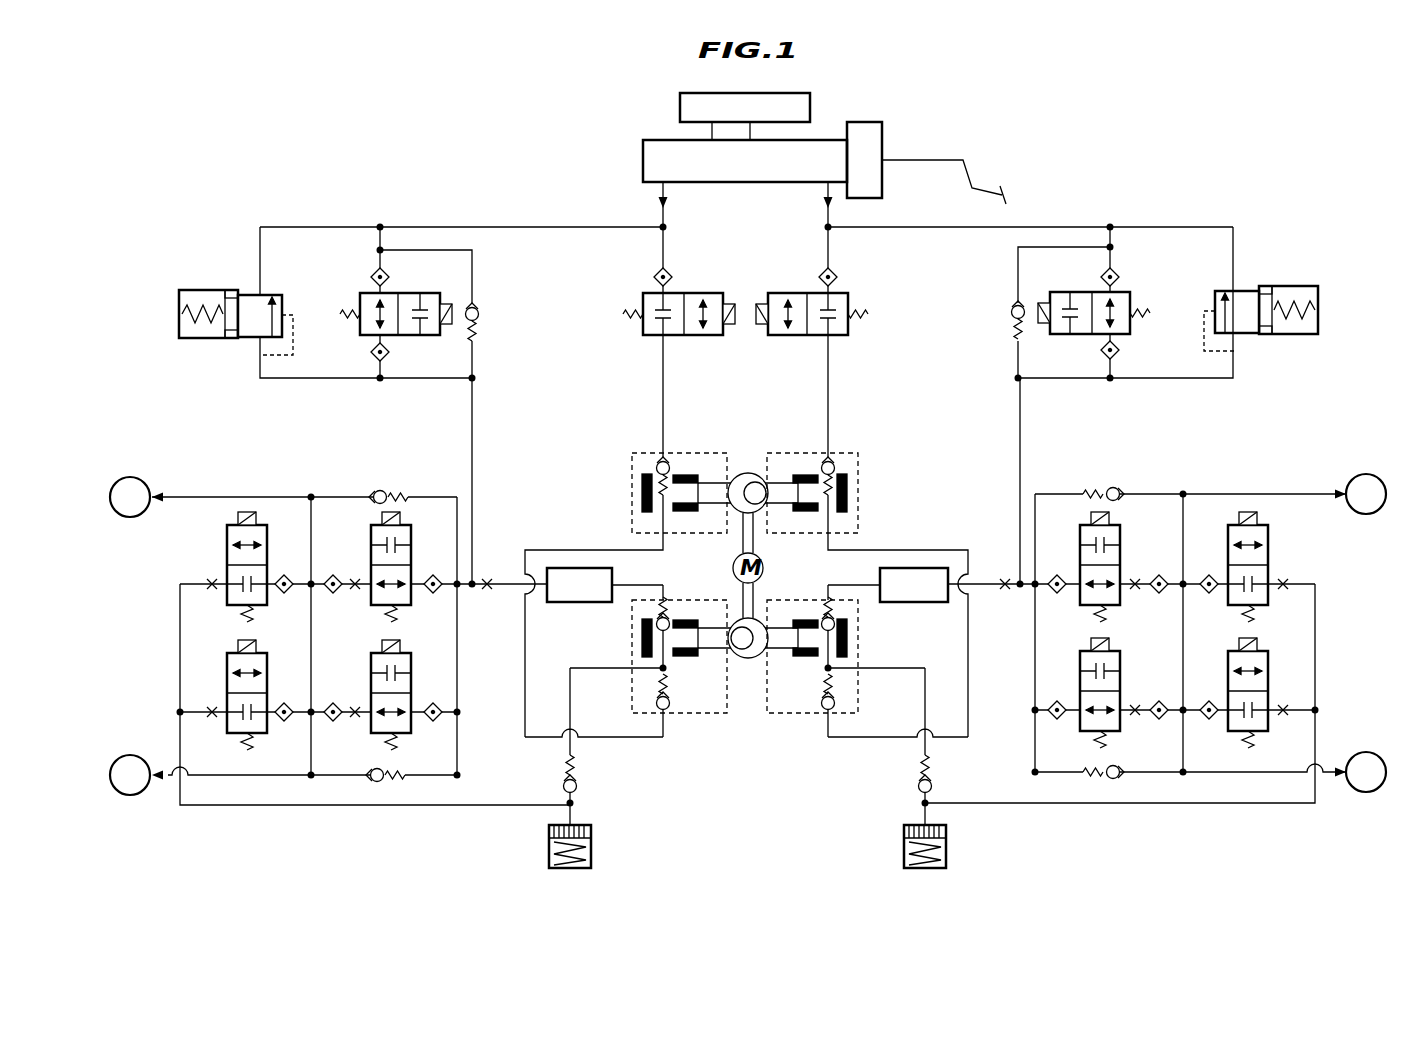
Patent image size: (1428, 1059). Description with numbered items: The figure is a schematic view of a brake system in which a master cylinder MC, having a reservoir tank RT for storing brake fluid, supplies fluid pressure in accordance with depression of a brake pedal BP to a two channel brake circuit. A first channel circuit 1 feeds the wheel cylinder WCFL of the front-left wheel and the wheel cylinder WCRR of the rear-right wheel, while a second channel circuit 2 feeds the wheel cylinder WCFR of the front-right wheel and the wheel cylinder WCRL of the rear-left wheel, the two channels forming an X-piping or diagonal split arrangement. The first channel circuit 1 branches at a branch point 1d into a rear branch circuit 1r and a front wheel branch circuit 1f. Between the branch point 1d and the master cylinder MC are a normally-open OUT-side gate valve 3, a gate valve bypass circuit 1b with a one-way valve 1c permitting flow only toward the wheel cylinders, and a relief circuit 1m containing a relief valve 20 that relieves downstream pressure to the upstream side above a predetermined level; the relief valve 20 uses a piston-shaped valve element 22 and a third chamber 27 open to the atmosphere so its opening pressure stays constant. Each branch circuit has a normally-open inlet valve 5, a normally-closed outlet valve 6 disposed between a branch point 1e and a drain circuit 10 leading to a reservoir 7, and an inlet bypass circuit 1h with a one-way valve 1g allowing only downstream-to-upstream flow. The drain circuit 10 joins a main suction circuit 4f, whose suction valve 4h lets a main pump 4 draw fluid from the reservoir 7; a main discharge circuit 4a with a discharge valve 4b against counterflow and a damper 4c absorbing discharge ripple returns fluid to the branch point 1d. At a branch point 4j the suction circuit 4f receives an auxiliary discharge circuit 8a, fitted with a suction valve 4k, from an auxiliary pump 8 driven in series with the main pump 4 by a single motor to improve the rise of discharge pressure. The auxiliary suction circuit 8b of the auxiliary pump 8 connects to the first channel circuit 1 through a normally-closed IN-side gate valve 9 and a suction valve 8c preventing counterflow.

The reservoir tank RT is at (810, 102).
The master cylinder MC is at (640, 148).
The brake pedal BP is at (1005, 190).
The first channel circuit 1 is at (842, 218).
The second channel circuit 2 is at (652, 220).
The OUT-side gate valve 3 is at (362, 293).
The IN-side gate valve 9 is at (712, 292).
The relief valve 20 is at (180, 286).
The valve element 22 is at (226, 325).
The third chamber 27 is at (188, 330).
The gate valve bypass circuit 1b is at (475, 258).
The one-way valve 1c is at (480, 312).
The relief circuit 1m is at (1236, 235).
The auxiliary pump 8 is at (757, 462).
The auxiliary discharge circuit 8a is at (612, 548).
The auxiliary suction circuit 8b is at (660, 372).
The suction valve 8c is at (660, 460).
The main pump 4 is at (748, 668).
The main discharge circuit 4a is at (668, 585).
The discharge valve 4b is at (672, 612).
The damper 4c is at (570, 568).
The main suction circuit 4f is at (585, 668).
The suction valve 4h is at (578, 768).
The branch point 4j is at (667, 670).
The suction valve 4k is at (668, 709).
The reservoir 7 is at (594, 845).
The drain circuit 10 is at (458, 806).
The front wheel branch circuit 1f is at (210, 497).
The one-way valve 1g is at (375, 490).
The inlet bypass circuit 1h is at (440, 497).
The branch point 1d is at (1025, 590).
The branch point 1e is at (1185, 590).
The rear branch circuit 1r is at (1240, 775).
The inlet valve 5 is at (368, 598).
The outlet valve 6 is at (228, 598).
The wheel cylinder of front-right wheel WCFR is at (140, 478).
The wheel cylinder of front-left wheel WCFL is at (1358, 474).
The wheel cylinder of rear-left wheel WCRL is at (136, 755).
The wheel cylinder of rear-right wheel WCRR is at (1366, 793).